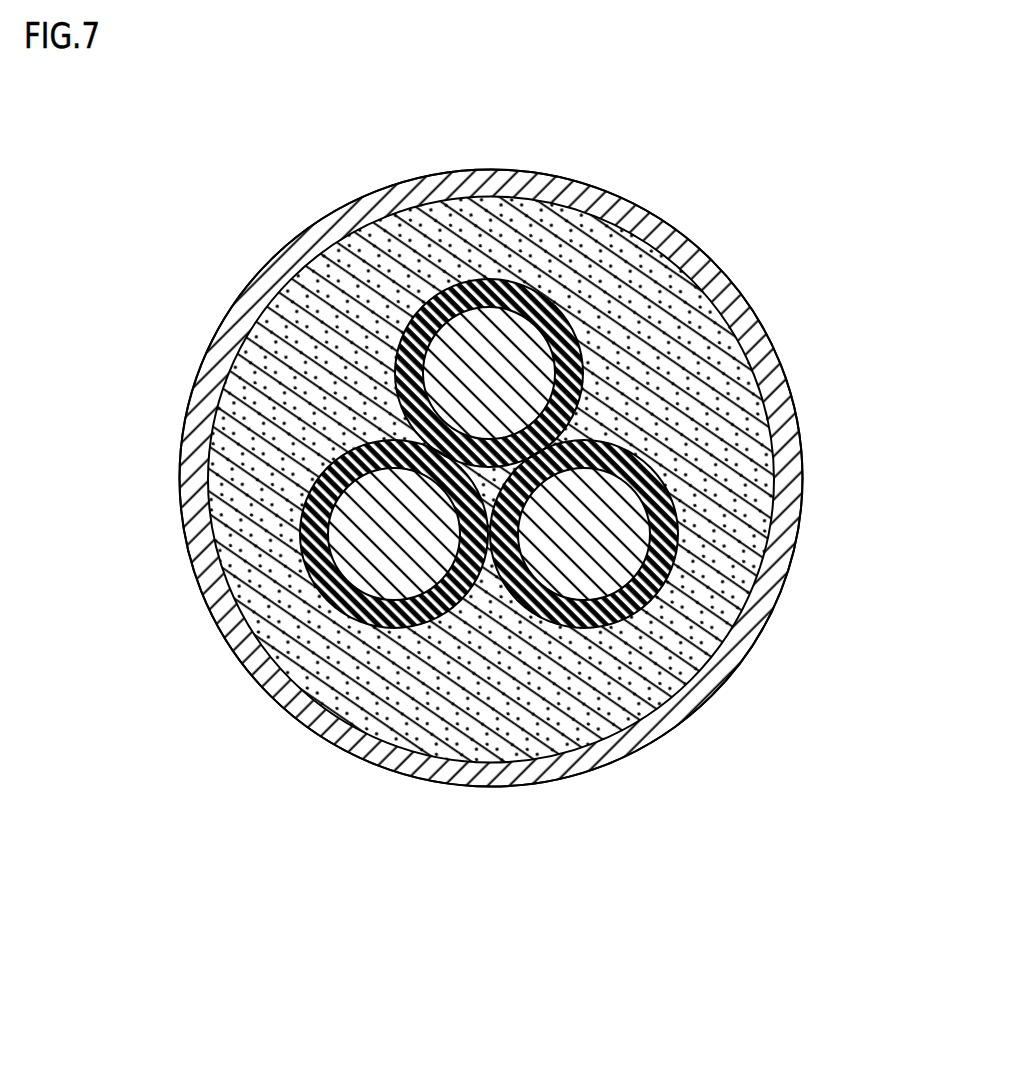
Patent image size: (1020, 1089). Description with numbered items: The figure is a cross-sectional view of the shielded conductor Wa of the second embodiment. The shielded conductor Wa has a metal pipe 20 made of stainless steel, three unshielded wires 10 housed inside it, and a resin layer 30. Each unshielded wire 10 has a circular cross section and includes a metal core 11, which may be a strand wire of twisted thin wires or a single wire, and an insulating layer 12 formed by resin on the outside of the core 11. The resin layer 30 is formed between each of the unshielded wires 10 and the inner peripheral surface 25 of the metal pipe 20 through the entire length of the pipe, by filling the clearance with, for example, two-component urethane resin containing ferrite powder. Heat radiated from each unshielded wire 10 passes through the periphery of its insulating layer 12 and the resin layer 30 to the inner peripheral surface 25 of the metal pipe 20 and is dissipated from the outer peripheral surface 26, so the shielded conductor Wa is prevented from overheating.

The shielded conductor Wa is at (668, 205).
The unshielded wire 10 is at (525, 504).
The core 11 is at (470, 357).
The insulating layer 12 is at (398, 340).
The metal pipe 20 is at (722, 298).
The inner peripheral surface 25 is at (777, 468).
The outer peripheral surface 26 is at (780, 606).
The resin layer 30 is at (754, 522).